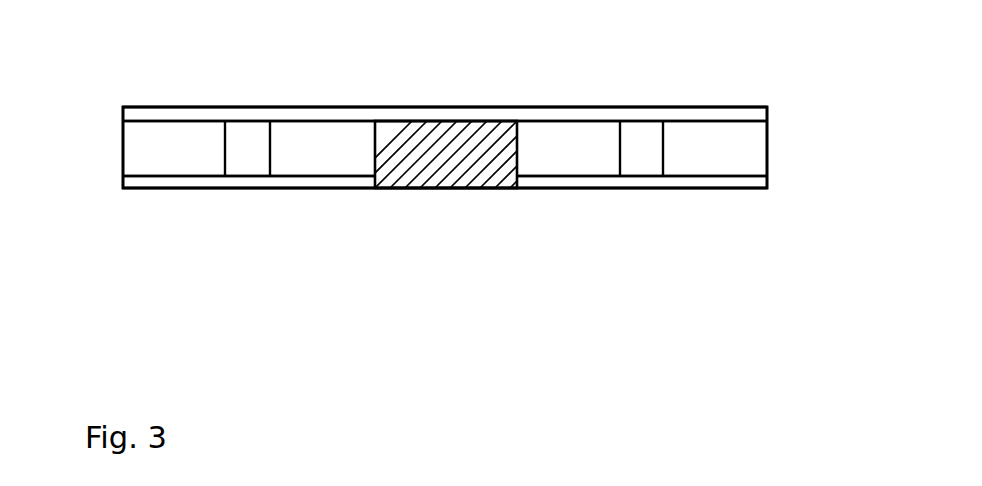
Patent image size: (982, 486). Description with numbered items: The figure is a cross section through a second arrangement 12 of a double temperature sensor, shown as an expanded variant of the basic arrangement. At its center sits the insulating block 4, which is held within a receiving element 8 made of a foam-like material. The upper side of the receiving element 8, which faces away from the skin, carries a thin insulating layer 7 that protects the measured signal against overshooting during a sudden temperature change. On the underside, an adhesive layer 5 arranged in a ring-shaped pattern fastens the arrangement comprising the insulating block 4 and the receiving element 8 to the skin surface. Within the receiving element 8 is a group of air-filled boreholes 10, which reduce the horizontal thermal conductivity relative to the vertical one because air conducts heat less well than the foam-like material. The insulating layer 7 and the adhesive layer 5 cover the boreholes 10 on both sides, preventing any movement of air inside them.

The insulating block 4 is at (452, 157).
The adhesive layer 5 is at (295, 178).
The insulating layer 7 is at (467, 115).
The receiving element 8 is at (745, 158).
The air-filled boreholes 10 is at (247, 138).
The second arrangement 12 is at (263, 218).